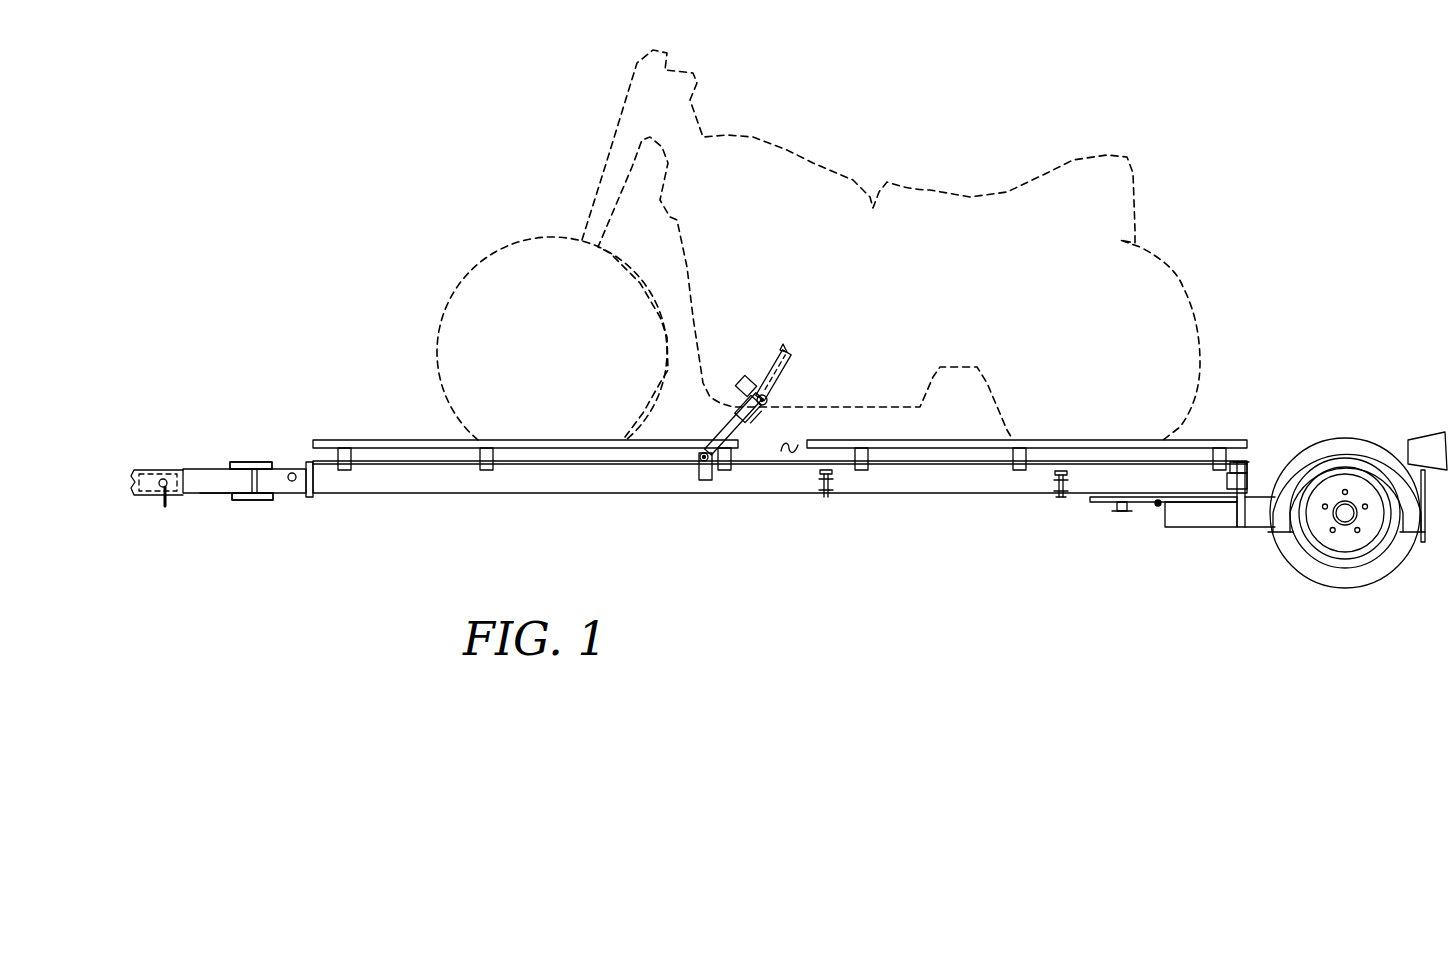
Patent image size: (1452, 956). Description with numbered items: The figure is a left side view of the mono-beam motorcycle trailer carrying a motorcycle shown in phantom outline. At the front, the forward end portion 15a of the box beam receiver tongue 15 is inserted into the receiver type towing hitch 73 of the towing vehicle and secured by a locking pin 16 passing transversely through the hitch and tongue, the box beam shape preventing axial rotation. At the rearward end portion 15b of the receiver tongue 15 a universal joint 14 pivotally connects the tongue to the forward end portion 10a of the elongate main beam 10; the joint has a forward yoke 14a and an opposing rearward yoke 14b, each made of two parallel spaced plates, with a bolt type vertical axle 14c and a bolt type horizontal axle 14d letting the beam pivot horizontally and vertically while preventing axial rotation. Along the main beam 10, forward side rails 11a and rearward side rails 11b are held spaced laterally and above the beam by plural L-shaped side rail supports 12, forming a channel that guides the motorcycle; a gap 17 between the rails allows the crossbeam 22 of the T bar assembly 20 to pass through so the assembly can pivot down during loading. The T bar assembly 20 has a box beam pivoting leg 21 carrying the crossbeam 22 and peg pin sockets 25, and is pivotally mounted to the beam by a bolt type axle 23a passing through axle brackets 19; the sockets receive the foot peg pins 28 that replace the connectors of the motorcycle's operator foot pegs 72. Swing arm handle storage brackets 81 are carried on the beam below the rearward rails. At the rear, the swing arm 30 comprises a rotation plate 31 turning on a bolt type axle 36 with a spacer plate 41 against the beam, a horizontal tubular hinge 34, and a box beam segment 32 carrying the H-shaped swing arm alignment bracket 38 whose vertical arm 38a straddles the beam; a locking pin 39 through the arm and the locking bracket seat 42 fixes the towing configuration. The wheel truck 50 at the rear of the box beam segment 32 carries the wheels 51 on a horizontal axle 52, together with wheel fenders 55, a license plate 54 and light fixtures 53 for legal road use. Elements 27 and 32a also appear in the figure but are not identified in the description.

The main beam 10 is at (545, 494).
The forward end portion of the main beam 10a is at (308, 495).
The forward side rails 11a is at (422, 438).
The rearward side rails 11b is at (943, 447).
The "L" shaped side rail supports 12 is at (350, 463).
The universal joint 14 is at (263, 458).
The forward yoke 14a is at (253, 500).
The rearward yoke 14b is at (273, 490).
The bolt type vertical axle 14c is at (235, 465).
The bolt type horizontal axle 14d is at (289, 472).
The box beam receiver tongue 15 is at (208, 485).
The forward end portion of the receiver tongue 15a is at (160, 463).
The rearward end portion of the receiver tongue 15b is at (233, 485).
The locking pin 16 is at (164, 495).
The gap 17 is at (787, 453).
The axle brackets 19 is at (698, 478).
The "T" bar assembly 20 is at (748, 426).
The box beam pivoting leg 21 is at (733, 430).
The crossbeam 22 is at (768, 414).
The bolt type axle 23a is at (687, 462).
The peg pin socket 25 is at (767, 398).
The chock post 27 is at (770, 383).
The foot peg pin 28 is at (752, 383).
The swing arm 30 is at (1209, 529).
The rotation plate 31 is at (1092, 499).
The box beam segment 32 is at (1218, 512).
The housing bolt 32a is at (1157, 506).
The horizontal tubular hinge 34 is at (1141, 512).
The bolt type axle 36 is at (1118, 509).
The swing arm alignment bracket 38 is at (1242, 512).
The vertical arm 38a is at (1241, 478).
The locking pin 39 is at (1228, 481).
The spacer plate 41 is at (1063, 497).
The locking bracket seat 42 is at (1237, 466).
The wheel truck 50 is at (1330, 591).
The wheels 51 is at (1347, 578).
The horizontal axle 52 is at (1341, 519).
The light fixtures 53 is at (1428, 448).
The license plate 54 is at (1427, 544).
The wheel fenders 55 is at (1337, 436).
The operator foot peg 72 is at (777, 353).
The receiver type towing hitch 73 is at (140, 470).
The swing arm handle storage brackets 81 is at (826, 498).